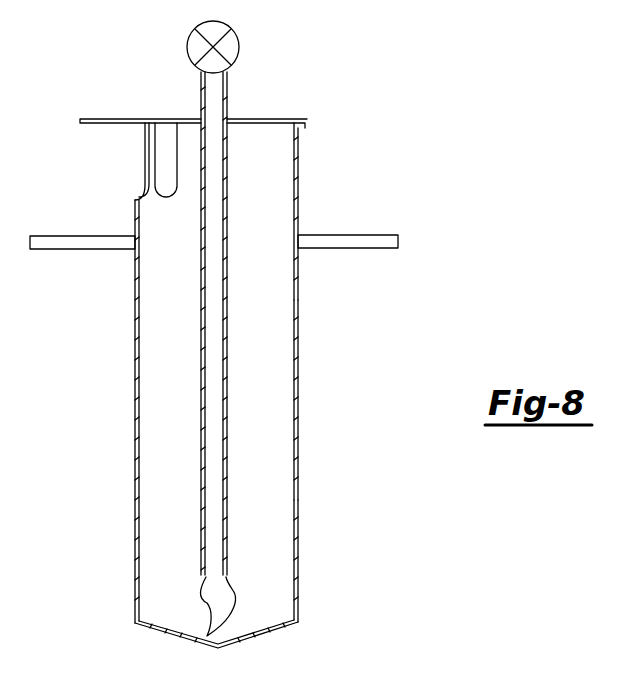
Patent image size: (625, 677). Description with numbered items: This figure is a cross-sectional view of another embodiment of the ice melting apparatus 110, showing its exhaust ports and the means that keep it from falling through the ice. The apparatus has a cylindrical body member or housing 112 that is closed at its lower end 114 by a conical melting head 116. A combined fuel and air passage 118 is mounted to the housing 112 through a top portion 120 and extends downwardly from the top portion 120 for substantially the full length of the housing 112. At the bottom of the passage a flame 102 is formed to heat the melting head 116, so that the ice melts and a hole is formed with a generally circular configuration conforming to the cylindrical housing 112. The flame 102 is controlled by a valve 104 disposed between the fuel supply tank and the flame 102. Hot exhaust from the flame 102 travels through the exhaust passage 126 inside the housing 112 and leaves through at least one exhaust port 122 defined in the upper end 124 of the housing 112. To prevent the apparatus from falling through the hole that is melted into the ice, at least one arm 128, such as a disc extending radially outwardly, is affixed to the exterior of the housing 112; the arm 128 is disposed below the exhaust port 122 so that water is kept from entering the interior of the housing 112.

The flame 102 is at (208, 598).
The valve 104 is at (252, 36).
The ice melting apparatus 110 is at (227, 400).
The housing 112 is at (300, 476).
The lower end 114 is at (300, 592).
The conical melting head 116 is at (243, 643).
The combined fuel and air passage 118 is at (212, 367).
The top portion 120 is at (287, 121).
The exhaust port 122 is at (136, 161).
The upper end 124 is at (298, 182).
The exhaust passage 126 is at (162, 508).
The arm 128 is at (348, 258).